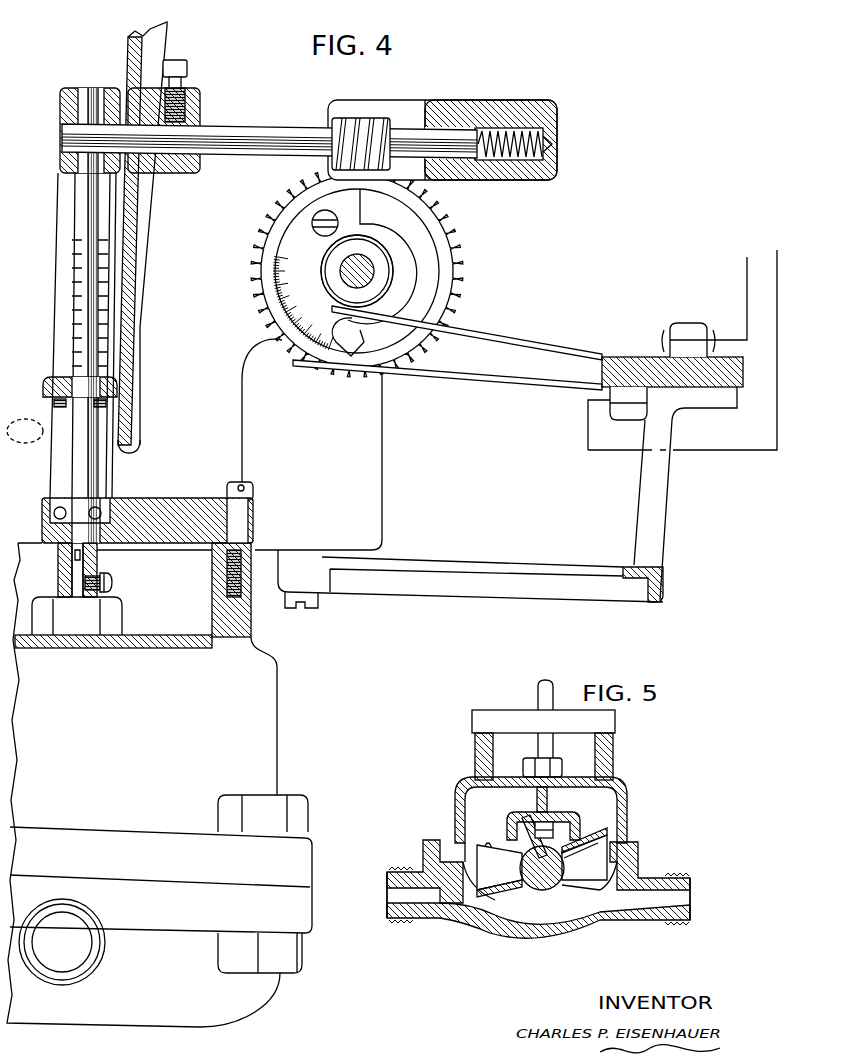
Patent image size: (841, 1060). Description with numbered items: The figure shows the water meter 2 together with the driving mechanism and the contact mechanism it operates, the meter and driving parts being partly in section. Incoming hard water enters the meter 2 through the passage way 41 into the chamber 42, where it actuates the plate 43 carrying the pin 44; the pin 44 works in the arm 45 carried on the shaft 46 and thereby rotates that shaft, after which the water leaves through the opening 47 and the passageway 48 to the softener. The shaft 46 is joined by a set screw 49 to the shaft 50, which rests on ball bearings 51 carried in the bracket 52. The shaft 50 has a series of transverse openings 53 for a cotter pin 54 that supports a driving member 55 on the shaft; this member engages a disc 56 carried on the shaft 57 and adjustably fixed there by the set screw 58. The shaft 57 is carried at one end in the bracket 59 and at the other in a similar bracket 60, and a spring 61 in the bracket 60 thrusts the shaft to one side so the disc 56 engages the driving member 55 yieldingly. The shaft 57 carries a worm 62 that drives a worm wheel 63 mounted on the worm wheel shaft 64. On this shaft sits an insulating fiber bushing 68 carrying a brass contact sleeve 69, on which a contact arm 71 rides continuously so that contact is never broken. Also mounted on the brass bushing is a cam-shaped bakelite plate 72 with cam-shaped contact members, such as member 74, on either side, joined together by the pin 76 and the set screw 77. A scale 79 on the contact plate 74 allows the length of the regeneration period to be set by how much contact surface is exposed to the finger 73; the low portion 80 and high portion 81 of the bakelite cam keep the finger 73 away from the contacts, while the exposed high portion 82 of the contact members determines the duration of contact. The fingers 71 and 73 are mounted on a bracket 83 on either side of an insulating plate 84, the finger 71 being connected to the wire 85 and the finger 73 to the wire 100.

In FIG. 4, the meter 2 is at (238, 1020).
In FIG. 5, the meter 2 is at (510, 928).
In FIG. 5, the passage way 41 is at (694, 901).
In FIG. 5, the chamber 42 is at (592, 878).
In FIG. 5, the plate 43 is at (588, 872).
In FIG. 5, the pin 44 is at (549, 836).
In FIG. 5, the arm 45 is at (516, 814).
In FIG. 4, the shaft 46 is at (66, 573).
In FIG. 5, the shaft 46 is at (548, 800).
In FIG. 5, the opening 47 is at (489, 843).
In FIG. 5, the passageway 48 is at (395, 889).
In FIG. 4, the set screw 49 is at (113, 584).
In FIG. 4, the shaft 50 is at (78, 497).
In FIG. 4, the ball bearings 51 is at (52, 515).
In FIG. 4, the bracket 52 is at (172, 490).
In FIG. 4, the transverse openings 53 is at (70, 443).
In FIG. 4, the cotter pin 54 is at (54, 403).
In FIG. 4, the driving member 55 is at (48, 382).
In FIG. 4, the disc 56 is at (134, 357).
In FIG. 4, the shaft 57 is at (255, 150).
In FIG. 4, the set screw 58 is at (188, 68).
In FIG. 4, the bracket 59 is at (107, 88).
In FIG. 4, the bracket 60 is at (483, 101).
In FIG. 4, the spring 61 is at (530, 142).
In FIG. 4, the worm 62 is at (366, 118).
In FIG. 4, the worm wheel 63 is at (450, 214).
In FIG. 4, the worm wheel shaft 64 is at (362, 262).
In FIG. 4, the insulating fiber bushing 68 is at (393, 271).
In FIG. 4, the brass contact sleeve 69 is at (380, 258).
In FIG. 4, the contact arm 71 is at (545, 343).
In FIG. 4, the bakelite plate 72 is at (311, 178).
In FIG. 4, the finger 73 is at (526, 383).
In FIG. 4, the contact member 74 is at (297, 212).
In FIG. 4, the pin 76 is at (346, 350).
In FIG. 4, the set screw 77 is at (318, 232).
In FIG. 4, the scale 79 is at (268, 294).
In FIG. 4, the low portion of the cam 80 is at (421, 292).
In FIG. 4, the high portion of the cam 81 is at (279, 350).
In FIG. 4, the high portion of the contact members 82 is at (331, 366).
In FIG. 4, the bracket 83 is at (642, 505).
In FIG. 4, the insulating plate 84 is at (602, 364).
In FIG. 4, the wire 85 is at (747, 257).
In FIG. 4, the wire 100 is at (777, 250).